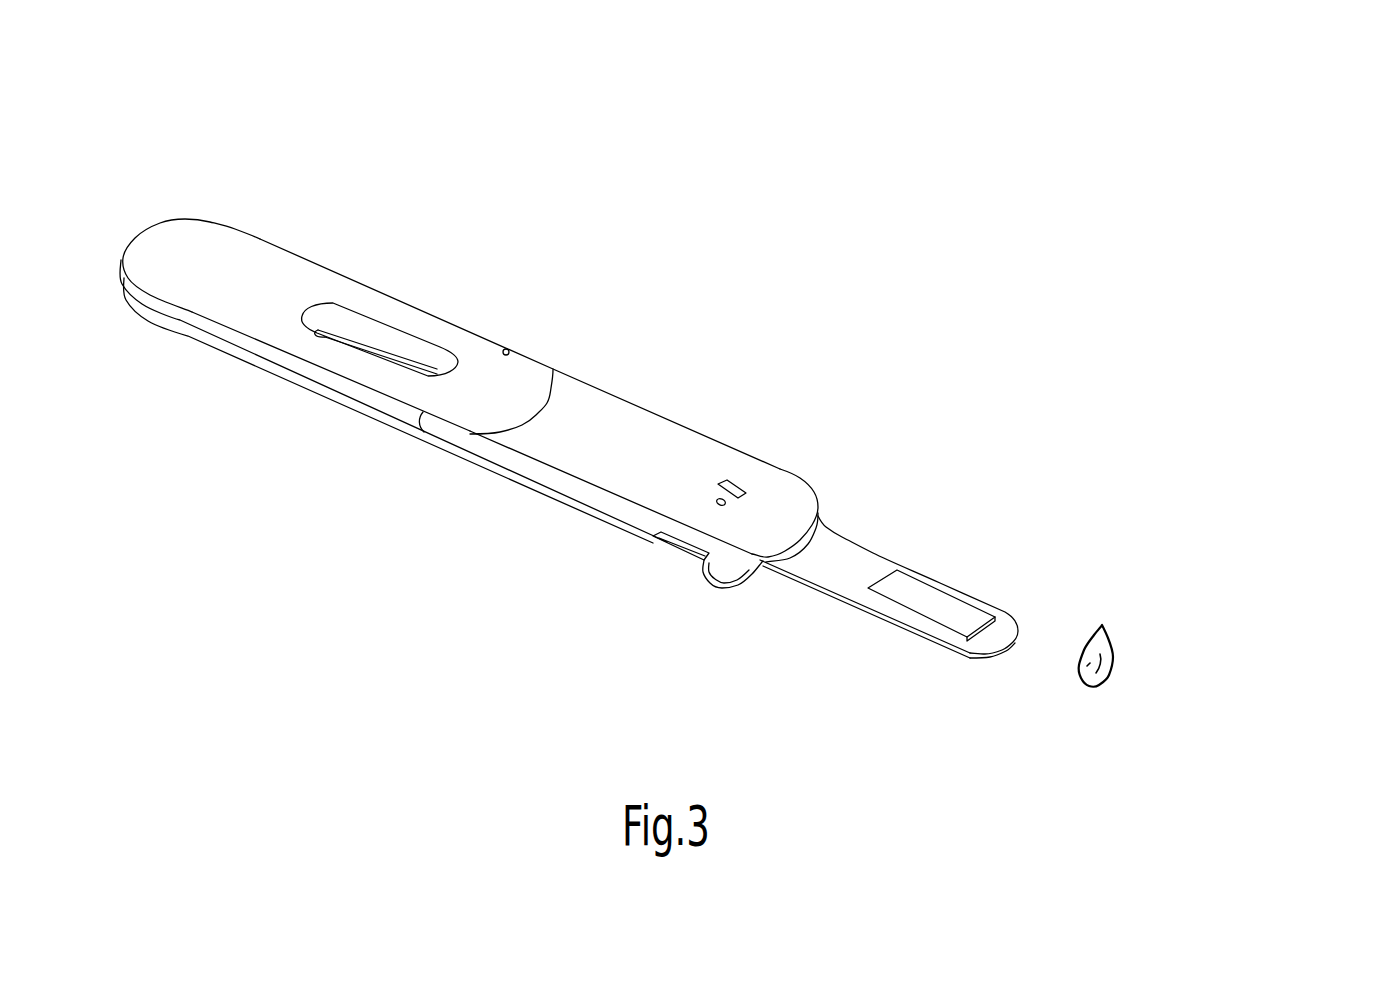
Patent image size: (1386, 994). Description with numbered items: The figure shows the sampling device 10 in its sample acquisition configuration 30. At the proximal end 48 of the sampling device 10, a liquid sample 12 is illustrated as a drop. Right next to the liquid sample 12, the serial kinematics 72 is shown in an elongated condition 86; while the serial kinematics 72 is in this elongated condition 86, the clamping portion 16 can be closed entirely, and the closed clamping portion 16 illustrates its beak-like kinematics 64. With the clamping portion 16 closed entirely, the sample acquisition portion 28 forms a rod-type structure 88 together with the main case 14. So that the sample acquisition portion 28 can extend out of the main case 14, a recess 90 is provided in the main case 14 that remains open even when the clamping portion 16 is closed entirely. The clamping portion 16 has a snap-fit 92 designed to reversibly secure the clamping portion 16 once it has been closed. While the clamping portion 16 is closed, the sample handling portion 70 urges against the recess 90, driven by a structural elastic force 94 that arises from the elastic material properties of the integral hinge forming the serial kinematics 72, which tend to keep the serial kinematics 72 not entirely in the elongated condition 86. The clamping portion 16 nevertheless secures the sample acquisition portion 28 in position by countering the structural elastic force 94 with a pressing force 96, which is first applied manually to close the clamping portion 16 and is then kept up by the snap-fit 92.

The sampling device 10 is at (657, 432).
The sample acquisition configuration 30 is at (657, 432).
The main case 14 is at (257, 210).
The clamping portion 16 is at (675, 353).
The beak-like kinematics 64 is at (695, 368).
The sample handling portion 70 is at (977, 587).
The serial kinematics 72 is at (977, 587).
The elongated condition 86 is at (977, 587).
The sample acquisition portion 28 is at (927, 603).
The liquid sample 12 is at (1133, 638).
The proximal end 48 is at (1227, 705).
The rod-type structure 88 is at (717, 682).
The recess 90 is at (675, 550).
The snap-fit 92 is at (527, 480).
The structural elastic force 94 is at (746, 605).
The pressing force 96 is at (750, 688).